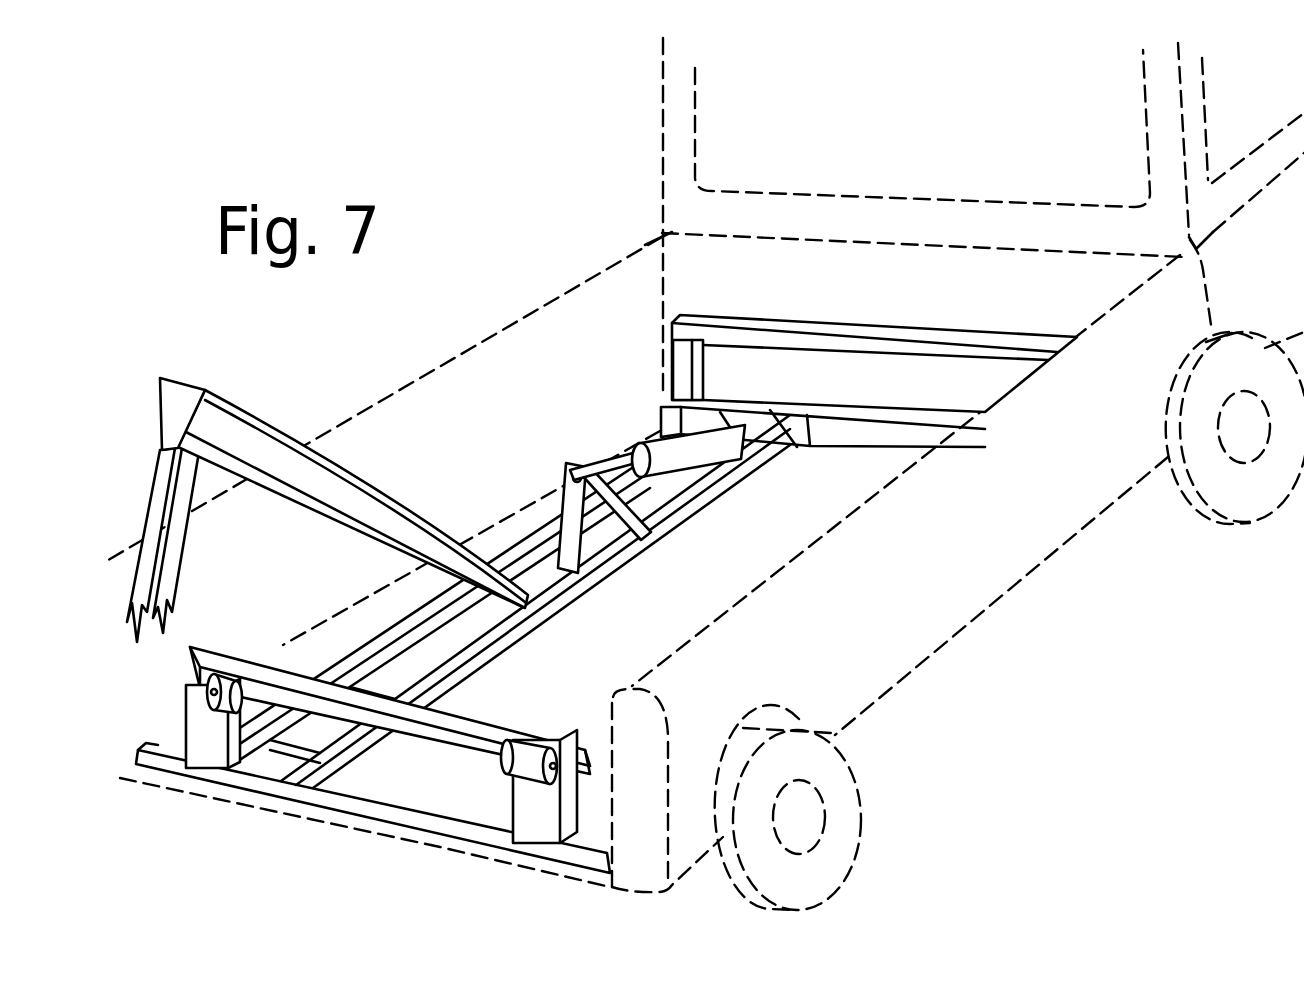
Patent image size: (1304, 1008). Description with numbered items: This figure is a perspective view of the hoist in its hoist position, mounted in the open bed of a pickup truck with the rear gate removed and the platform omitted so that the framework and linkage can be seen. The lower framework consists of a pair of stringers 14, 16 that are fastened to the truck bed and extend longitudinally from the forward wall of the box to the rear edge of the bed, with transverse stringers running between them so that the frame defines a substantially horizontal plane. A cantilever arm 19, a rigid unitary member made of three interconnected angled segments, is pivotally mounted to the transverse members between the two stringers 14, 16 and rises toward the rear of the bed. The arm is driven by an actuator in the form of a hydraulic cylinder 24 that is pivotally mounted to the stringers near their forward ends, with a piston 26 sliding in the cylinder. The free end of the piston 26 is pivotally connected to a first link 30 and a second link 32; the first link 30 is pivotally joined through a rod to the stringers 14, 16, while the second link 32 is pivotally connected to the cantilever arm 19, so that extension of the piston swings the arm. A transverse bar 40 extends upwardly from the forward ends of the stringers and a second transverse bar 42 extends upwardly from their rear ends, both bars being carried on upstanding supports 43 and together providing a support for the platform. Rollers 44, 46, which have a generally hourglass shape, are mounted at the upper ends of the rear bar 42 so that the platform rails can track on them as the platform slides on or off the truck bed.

The stringer 14 is at (693, 510).
The stringer 16 is at (373, 640).
The cantilever arm 19 is at (383, 496).
The hydraulic cylinder 24 is at (700, 458).
The piston 26 is at (612, 452).
The first link 30 is at (622, 510).
The second link 32 is at (570, 507).
The transverse bar 40 is at (846, 326).
The second transverse bar 42 is at (443, 737).
The upstanding support 43 is at (703, 378).
The roller 44 is at (185, 670).
The roller 46 is at (518, 752).